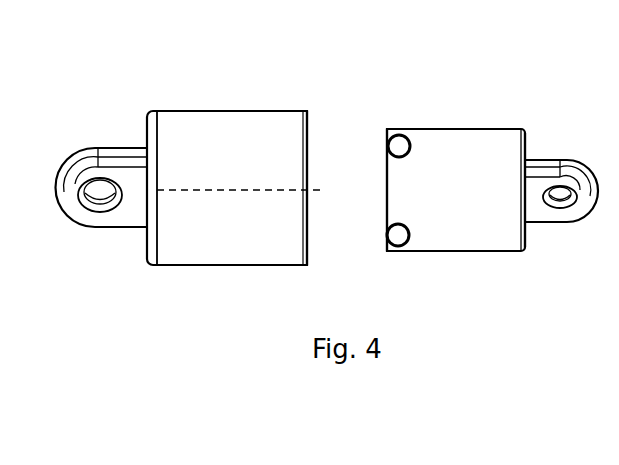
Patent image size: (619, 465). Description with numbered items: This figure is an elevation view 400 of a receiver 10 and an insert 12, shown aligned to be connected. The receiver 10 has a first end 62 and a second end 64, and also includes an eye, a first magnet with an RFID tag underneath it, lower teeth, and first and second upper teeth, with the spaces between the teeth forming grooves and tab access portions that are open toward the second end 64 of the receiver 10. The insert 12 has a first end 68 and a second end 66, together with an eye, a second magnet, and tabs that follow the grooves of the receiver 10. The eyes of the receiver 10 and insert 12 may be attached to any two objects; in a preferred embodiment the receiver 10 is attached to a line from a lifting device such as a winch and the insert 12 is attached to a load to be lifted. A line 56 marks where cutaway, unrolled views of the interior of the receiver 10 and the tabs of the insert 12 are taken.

The elevation view of the receiver and insert 400 is at (481, 50).
The receiver 10 is at (238, 128).
The insert 12 is at (443, 148).
The line 56 is at (250, 192).
The first end 62 is at (157, 112).
The second end 64 is at (306, 111).
The second end 66 is at (388, 129).
The first end 68 is at (522, 129).